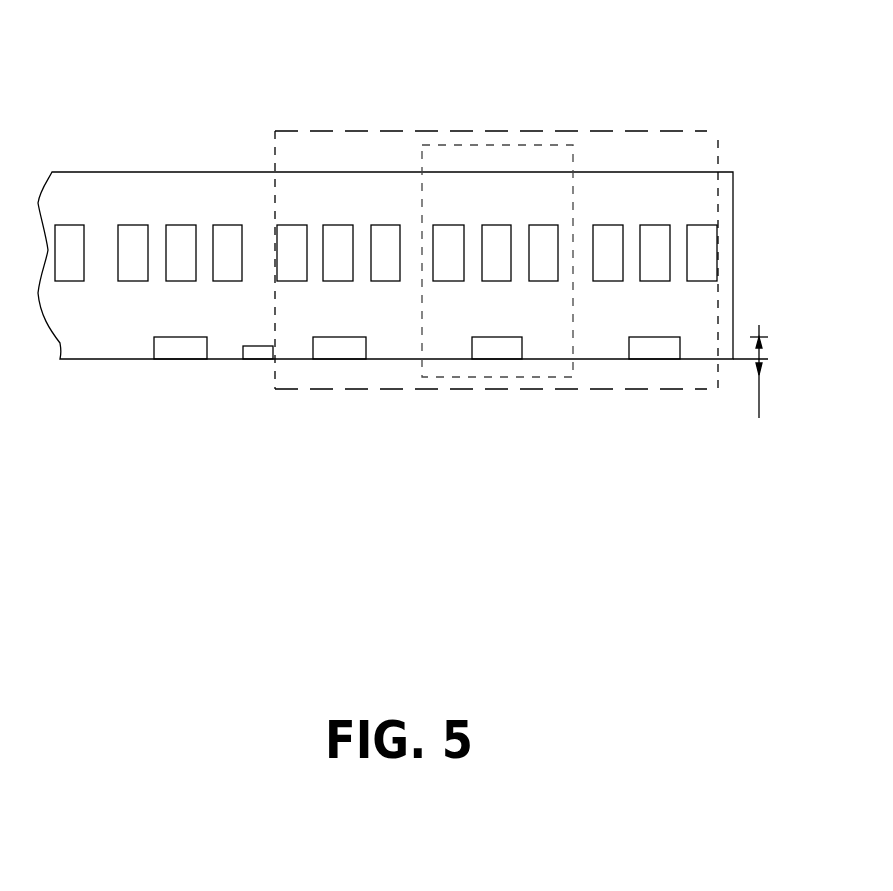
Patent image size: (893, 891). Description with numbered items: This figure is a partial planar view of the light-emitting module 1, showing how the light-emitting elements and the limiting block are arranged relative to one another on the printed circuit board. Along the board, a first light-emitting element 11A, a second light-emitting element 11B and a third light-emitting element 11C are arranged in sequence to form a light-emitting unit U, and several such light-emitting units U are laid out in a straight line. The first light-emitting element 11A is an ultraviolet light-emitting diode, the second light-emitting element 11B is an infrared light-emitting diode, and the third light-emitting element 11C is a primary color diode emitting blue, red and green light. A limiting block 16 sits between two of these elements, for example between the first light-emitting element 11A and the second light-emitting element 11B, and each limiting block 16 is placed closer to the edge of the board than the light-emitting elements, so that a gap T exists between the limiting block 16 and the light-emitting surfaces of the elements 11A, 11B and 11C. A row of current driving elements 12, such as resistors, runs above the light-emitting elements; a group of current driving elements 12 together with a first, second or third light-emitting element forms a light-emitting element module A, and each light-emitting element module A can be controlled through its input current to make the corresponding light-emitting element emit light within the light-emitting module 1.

The light-emitting module 1 is at (730, 167).
The current driving element 12 is at (503, 237).
The first light-emitting element 11A is at (172, 350).
The second light-emitting element 11B is at (493, 348).
The third light-emitting element 11C is at (338, 347).
The limiting block 16 is at (262, 348).
The light-emitting element module A is at (432, 158).
The light-emitting unit U is at (633, 150).
The gap T is at (749, 371).